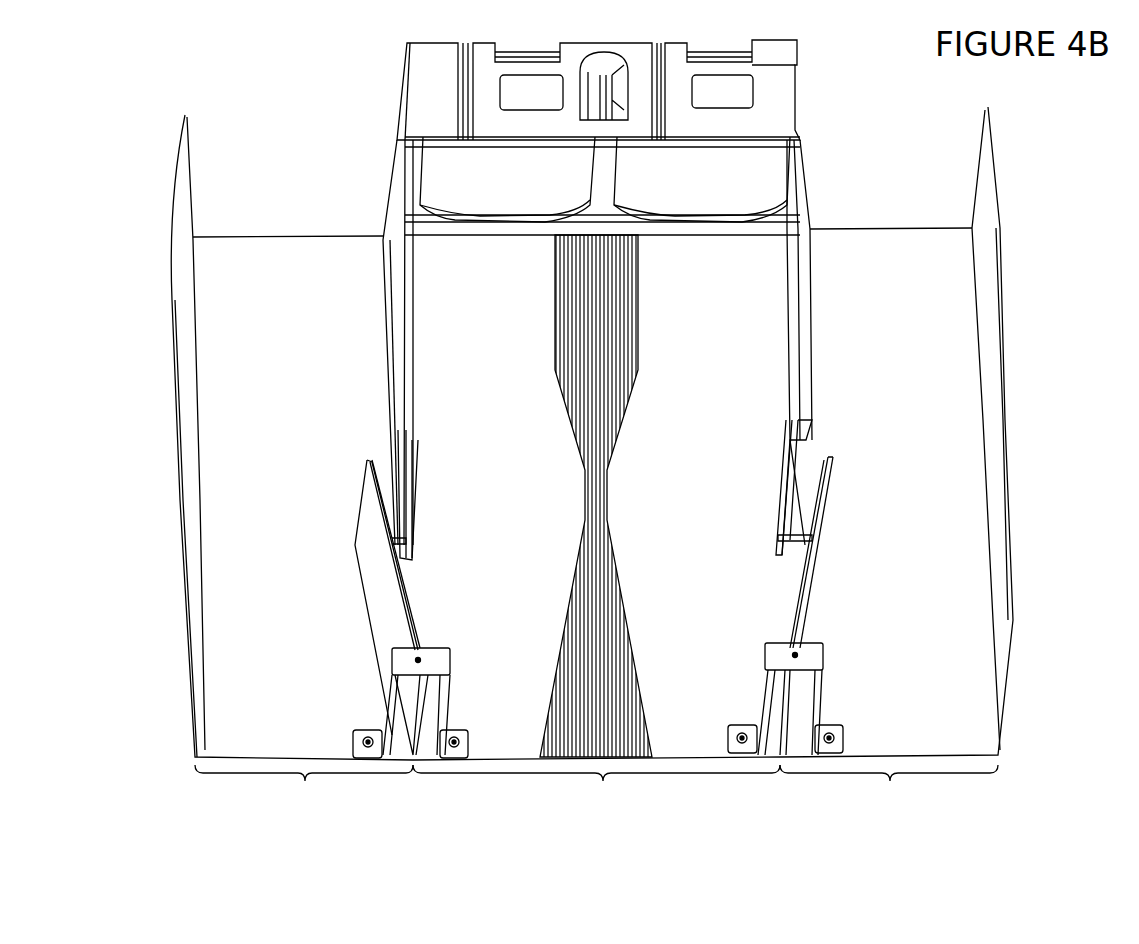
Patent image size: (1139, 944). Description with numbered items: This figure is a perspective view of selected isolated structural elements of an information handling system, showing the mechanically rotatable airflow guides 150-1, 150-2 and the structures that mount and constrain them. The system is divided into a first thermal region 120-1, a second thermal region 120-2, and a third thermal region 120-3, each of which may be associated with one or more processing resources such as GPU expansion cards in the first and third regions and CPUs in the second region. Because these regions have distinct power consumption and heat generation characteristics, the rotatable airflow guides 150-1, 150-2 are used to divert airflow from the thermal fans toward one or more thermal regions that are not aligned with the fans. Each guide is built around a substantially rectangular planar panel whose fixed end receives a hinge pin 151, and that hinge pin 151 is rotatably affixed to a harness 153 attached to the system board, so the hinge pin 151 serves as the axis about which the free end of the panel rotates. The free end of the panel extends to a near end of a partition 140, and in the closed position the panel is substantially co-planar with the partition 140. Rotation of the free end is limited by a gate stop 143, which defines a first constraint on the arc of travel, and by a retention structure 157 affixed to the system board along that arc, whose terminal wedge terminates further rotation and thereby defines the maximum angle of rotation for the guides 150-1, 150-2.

The first thermal region 120-1 is at (304, 790).
The second thermal region 120-2 is at (596, 787).
The third thermal region 120-3 is at (889, 787).
The partition 140 is at (408, 325).
The gate stop 143 is at (412, 490).
The rotatable airflow guide 150-1 is at (423, 584).
The rotatable airflow guide 150-2 is at (837, 586).
The hinge pin 151 is at (420, 658).
The harness 153 is at (452, 688).
The retention structure 157 is at (797, 543).